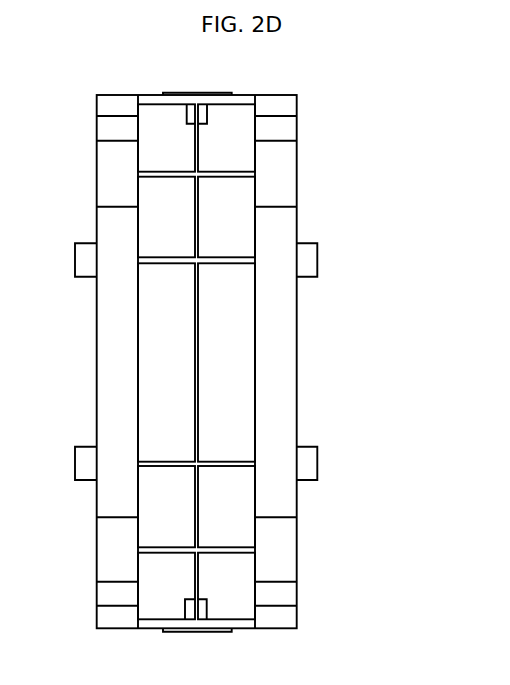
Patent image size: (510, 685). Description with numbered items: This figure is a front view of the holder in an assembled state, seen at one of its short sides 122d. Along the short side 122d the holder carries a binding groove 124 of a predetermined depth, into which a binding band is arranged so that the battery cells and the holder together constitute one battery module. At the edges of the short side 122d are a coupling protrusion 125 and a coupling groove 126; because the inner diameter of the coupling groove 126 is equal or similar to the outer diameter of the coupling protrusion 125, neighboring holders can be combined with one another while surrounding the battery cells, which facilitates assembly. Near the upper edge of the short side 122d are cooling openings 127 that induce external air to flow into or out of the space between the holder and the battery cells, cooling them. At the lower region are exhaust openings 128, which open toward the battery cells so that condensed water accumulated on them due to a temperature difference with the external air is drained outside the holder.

The short side 122d is at (251, 362).
The binding groove 124 is at (265, 361).
The coupling protrusion 125 is at (308, 260).
The coupling groove 126 is at (308, 463).
The cooling opening 127 is at (289, 123).
The exhaust opening 128 is at (288, 606).